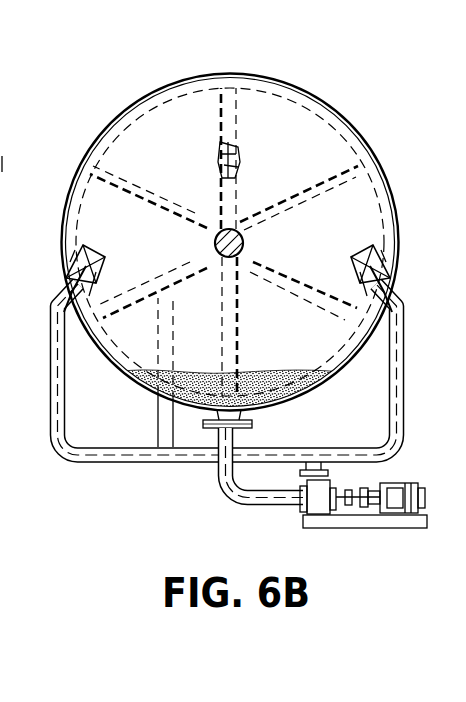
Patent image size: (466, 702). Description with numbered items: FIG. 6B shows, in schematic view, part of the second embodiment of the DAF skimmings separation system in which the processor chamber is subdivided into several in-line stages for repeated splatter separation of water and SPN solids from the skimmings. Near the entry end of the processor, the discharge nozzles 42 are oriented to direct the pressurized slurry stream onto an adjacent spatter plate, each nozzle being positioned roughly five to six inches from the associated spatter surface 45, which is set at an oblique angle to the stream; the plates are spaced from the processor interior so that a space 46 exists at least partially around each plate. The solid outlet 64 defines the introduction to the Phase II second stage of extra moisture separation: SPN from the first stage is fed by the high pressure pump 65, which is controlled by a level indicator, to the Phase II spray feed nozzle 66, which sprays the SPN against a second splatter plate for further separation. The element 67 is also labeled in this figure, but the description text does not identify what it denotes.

The discharge nozzle 42 is at (232, 175).
The spatter surface 45 is at (238, 158).
The space 46 is at (246, 164).
The solid outlet 64 is at (375, 528).
The high pressure pump 65 is at (85, 283).
The spray feed nozzle 66 is at (85, 268).
The collection tray 67 is at (86, 228).